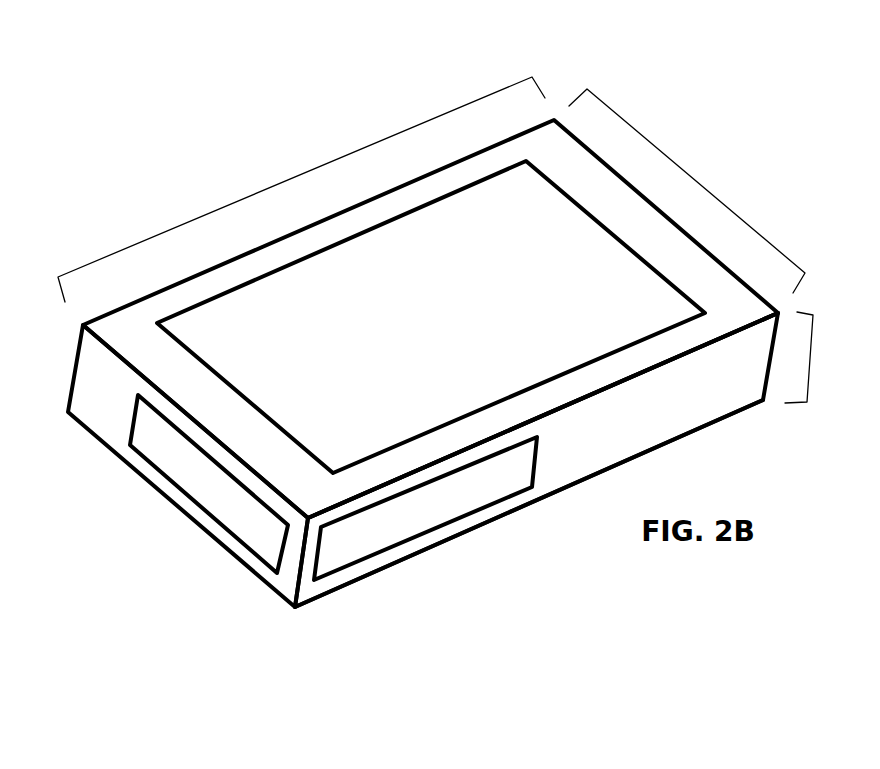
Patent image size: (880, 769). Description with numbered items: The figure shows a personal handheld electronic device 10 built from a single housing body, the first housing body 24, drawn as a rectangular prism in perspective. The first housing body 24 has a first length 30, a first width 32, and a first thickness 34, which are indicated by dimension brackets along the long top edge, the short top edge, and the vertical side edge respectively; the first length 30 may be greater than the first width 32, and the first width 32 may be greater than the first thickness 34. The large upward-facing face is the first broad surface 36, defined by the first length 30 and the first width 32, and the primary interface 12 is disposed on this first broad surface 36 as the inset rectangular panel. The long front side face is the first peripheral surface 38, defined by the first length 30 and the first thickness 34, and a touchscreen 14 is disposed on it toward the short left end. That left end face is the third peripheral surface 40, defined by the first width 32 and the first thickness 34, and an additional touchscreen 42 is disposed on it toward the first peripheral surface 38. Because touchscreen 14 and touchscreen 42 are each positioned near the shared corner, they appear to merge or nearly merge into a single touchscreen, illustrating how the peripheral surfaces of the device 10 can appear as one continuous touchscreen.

The personal handheld electronic device 10 is at (658, 70).
The primary interface 12 is at (400, 331).
The touchscreen 14 is at (412, 516).
The first housing body 24 is at (280, 0).
The first length 30 is at (293, 176).
The first width 32 is at (698, 182).
The first thickness 34 is at (810, 358).
The first broad surface 36 is at (720, 314).
The first peripheral surface 38 is at (720, 383).
The third peripheral surface 40 is at (92, 403).
The touchscreen 42 is at (187, 484).